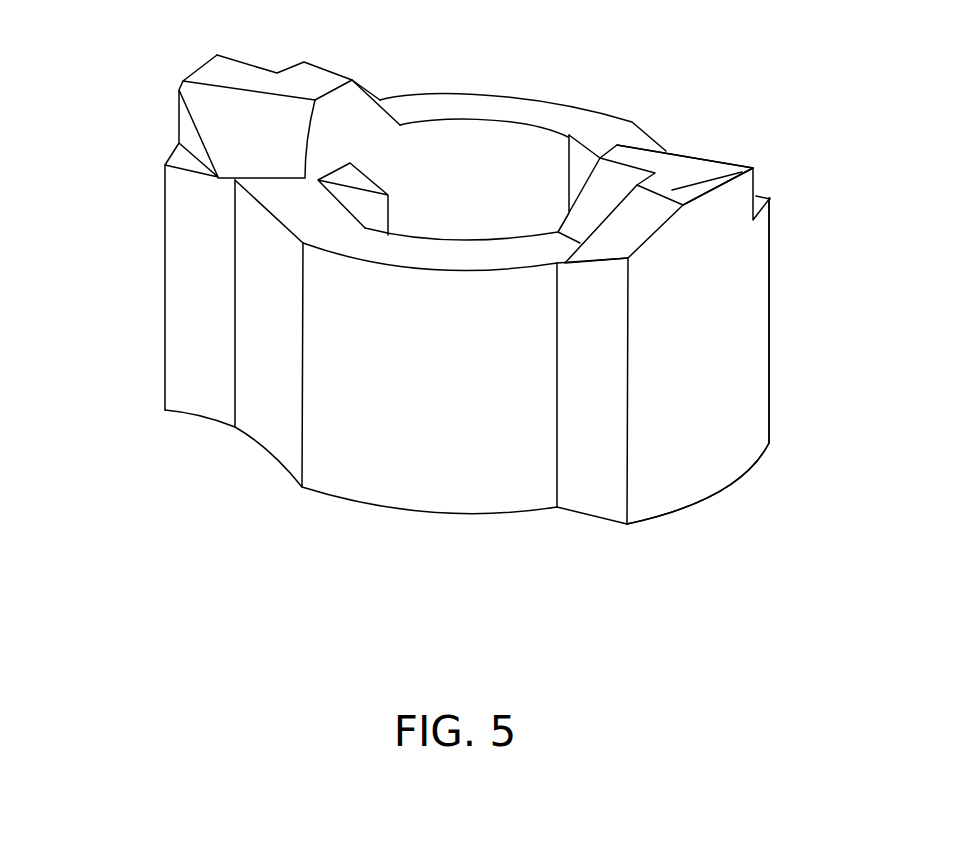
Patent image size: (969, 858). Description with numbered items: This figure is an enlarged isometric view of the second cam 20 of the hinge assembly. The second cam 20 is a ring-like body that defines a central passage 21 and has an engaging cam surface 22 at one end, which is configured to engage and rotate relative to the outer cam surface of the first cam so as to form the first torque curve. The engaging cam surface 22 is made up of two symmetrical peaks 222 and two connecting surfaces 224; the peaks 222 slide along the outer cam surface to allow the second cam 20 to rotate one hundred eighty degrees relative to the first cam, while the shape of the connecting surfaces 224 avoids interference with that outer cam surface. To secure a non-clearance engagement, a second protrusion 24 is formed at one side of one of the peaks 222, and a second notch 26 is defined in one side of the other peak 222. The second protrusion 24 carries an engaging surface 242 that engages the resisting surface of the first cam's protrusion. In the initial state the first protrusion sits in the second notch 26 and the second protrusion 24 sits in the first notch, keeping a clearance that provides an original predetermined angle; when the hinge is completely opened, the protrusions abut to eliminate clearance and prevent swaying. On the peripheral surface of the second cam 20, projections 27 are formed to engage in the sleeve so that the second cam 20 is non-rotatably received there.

The second cam 20 is at (457, 455).
The passage 21 is at (463, 150).
The engaging cam surface 22 is at (86, 26).
The peaks 222 is at (213, 73).
The connecting surfaces 224 is at (310, 210).
The second protrusion 24 is at (753, 168).
The engaging surface 242 is at (637, 223).
The second notch 26 is at (260, 58).
The projections 27 is at (682, 445).